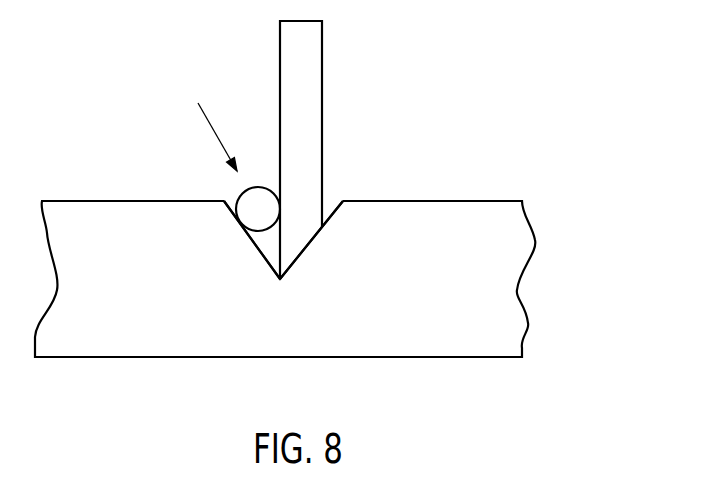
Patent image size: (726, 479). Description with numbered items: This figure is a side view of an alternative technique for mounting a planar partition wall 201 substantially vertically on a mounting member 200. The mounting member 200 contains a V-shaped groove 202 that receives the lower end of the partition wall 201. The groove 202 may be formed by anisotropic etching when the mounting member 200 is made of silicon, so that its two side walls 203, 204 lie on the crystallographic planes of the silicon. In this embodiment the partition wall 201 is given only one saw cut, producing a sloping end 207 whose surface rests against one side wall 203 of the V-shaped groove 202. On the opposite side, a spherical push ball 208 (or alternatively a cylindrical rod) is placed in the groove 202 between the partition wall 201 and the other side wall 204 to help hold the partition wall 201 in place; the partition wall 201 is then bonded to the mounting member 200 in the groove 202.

The mounting member 200 is at (534, 259).
The partition wall 201 is at (324, 107).
The groove 202 is at (272, 270).
The side wall 203 is at (324, 237).
The side wall 204 is at (250, 242).
The sloping end 207 is at (304, 239).
The push ball 208 is at (238, 195).